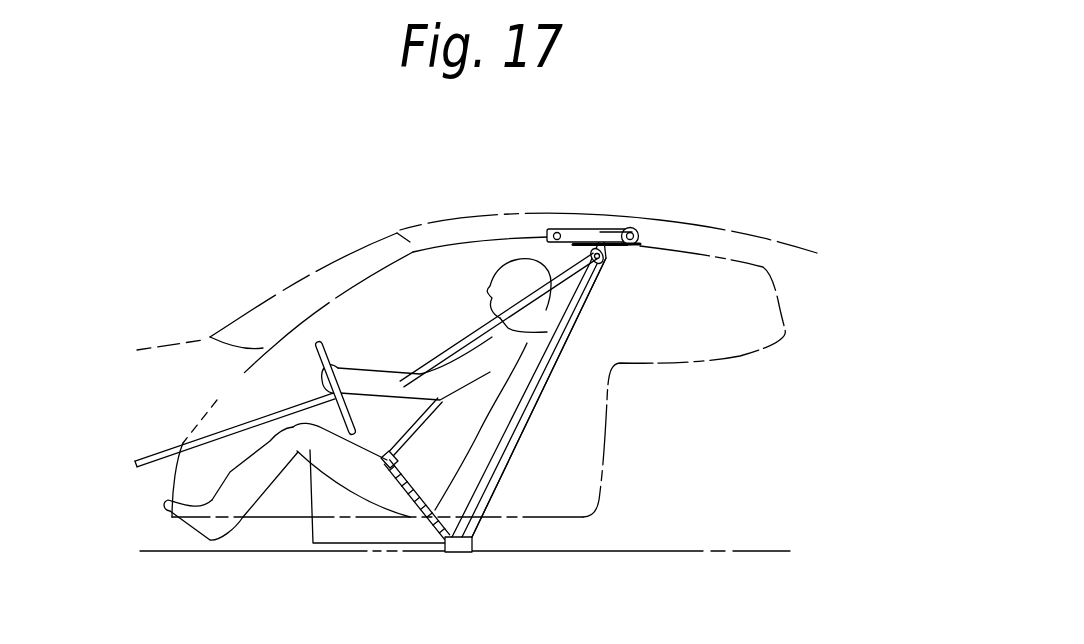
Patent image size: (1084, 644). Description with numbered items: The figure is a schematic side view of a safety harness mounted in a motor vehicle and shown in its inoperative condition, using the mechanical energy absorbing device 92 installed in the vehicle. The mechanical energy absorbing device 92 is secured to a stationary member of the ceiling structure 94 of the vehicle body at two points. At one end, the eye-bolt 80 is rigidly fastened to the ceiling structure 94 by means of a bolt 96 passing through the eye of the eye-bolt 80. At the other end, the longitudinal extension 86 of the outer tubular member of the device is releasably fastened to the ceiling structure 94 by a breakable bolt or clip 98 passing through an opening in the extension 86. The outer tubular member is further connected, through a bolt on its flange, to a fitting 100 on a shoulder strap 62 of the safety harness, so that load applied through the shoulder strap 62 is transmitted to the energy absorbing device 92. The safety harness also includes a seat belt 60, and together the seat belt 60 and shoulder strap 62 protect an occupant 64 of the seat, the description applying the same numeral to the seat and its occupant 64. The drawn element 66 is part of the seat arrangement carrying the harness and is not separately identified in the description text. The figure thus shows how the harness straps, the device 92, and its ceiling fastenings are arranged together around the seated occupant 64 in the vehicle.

The seat belt 60 is at (440, 540).
The shoulder strap 62 is at (574, 298).
The occupant 64 is at (472, 336).
The belt support arm 66 is at (505, 444).
The eye-bolt 80 is at (640, 230).
The extension 86 is at (567, 229).
The mechanical energy absorbing device 92 is at (605, 229).
The ceiling structure 94 is at (682, 255).
The bolt 96 is at (633, 247).
The breakable bolt or clip 98 is at (548, 231).
The fitting 100 is at (602, 263).